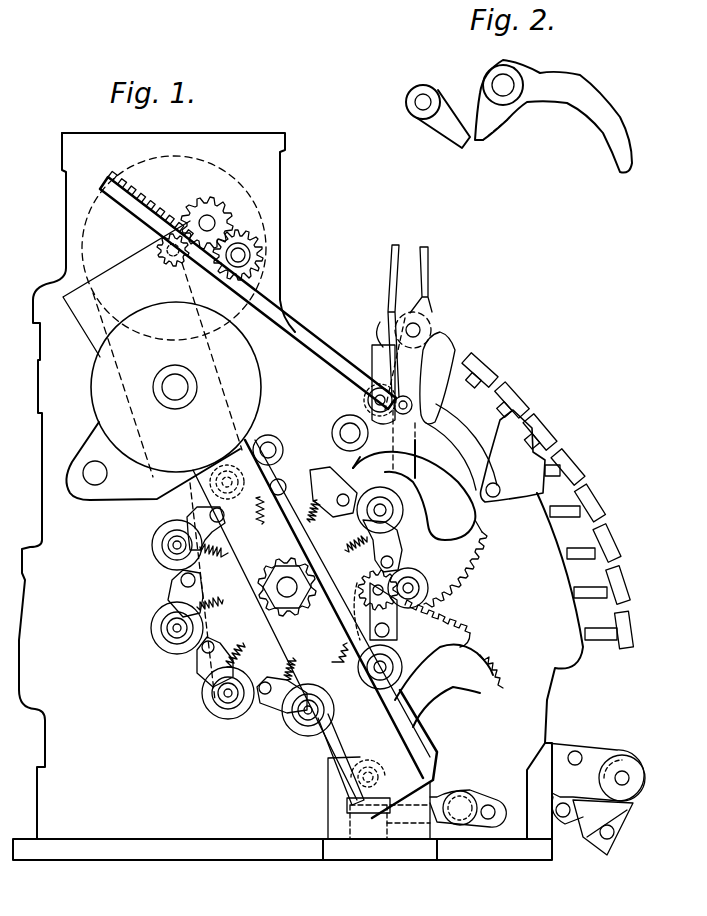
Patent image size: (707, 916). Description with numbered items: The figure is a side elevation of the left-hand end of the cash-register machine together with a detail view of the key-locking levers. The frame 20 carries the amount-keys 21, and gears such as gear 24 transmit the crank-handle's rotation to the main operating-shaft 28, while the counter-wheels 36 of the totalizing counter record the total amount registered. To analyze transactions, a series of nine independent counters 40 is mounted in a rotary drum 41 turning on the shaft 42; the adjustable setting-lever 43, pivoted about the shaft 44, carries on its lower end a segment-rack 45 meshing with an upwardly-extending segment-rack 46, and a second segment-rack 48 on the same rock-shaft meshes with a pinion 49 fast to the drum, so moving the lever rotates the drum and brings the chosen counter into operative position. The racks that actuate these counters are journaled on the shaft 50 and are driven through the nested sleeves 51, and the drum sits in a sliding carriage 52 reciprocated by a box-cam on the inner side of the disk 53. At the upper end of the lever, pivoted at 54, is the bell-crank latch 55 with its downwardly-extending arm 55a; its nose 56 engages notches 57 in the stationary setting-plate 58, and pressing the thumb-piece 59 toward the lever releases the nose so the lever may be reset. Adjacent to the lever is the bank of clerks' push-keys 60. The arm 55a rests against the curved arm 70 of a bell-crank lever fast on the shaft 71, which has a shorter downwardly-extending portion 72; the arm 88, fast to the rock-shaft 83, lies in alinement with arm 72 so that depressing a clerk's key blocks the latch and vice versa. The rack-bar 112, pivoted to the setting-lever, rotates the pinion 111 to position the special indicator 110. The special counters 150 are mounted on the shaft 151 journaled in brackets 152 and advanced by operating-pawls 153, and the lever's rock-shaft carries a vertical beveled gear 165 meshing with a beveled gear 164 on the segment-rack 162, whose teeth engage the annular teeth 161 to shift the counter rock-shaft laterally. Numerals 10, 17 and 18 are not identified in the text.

In FIG. 1, the frame 20 is at (298, 496).
In FIG. 1, the special indicator 110 is at (243, 178).
In FIG. 1, the pinion 111 is at (160, 236).
In FIG. 1, the counter-wheels 36 is at (160, 262).
In FIG. 1, the rack-bar 112 is at (290, 318).
In FIG. 1, the disk 53 is at (176, 387).
In FIG. 1, the shaft 50 is at (186, 394).
In FIG. 1, the main operating-shaft 28 is at (100, 476).
In FIG. 1, the thumb-piece 59 is at (398, 246).
In FIG. 1, the nose 56 is at (372, 345).
In FIG. 1, the pivot 54 is at (416, 328).
In FIG. 1, the setting-lever 43 is at (442, 372).
In FIG. 1, the latch 55 is at (408, 368).
In FIG. 1, the downwardly-extending arm 55a is at (482, 364).
In FIG. 1, the gear 24 is at (347, 428).
In FIG. 1, the rock-shaft 83 is at (270, 447).
In FIG. 2, the rock-shaft 83 is at (421, 99).
In FIG. 1, the stationary setting-plate 58 is at (503, 427).
In FIG. 1, the notches 57 is at (528, 447).
In FIG. 1, the push-keys 60 is at (592, 500).
In FIG. 1, the amount-keys 21 is at (617, 550).
In FIG. 1, the curved arm 70 is at (414, 490).
In FIG. 2, the curved arm 70 is at (553, 116).
In FIG. 1, the shaft 44 is at (403, 510).
In FIG. 1, the segment-rack 45 is at (455, 563).
In FIG. 1, the toothed segment 18 is at (463, 625).
In FIG. 1, the cam body 10 is at (490, 660).
In FIG. 1, the shaft 42 is at (292, 580).
In FIG. 1, the segment-rack 48 is at (360, 598).
In FIG. 1, the segment-rack 46 is at (428, 580).
In FIG. 1, the independent counters 40 is at (160, 612).
In FIG. 1, the nested sleeves 51 is at (224, 582).
In FIG. 1, the rotary drum 41 is at (237, 641).
In FIG. 1, the pinion 49 is at (302, 514).
In FIG. 1, the sliding carriage 52 is at (410, 778).
In FIG. 1, the rod 17 is at (373, 778).
In FIG. 1, the vertical beveled gear 165 is at (328, 758).
In FIG. 1, the beveled gear 164 is at (347, 800).
In FIG. 1, the segment-rack 162 is at (428, 822).
In FIG. 1, the annular teeth 161 is at (495, 789).
In FIG. 1, the brackets 152 is at (562, 753).
In FIG. 1, the special counters 150 is at (630, 757).
In FIG. 1, the shaft 151 is at (624, 779).
In FIG. 1, the operating-pawls 153 is at (617, 815).
In FIG. 2, the arm 88 is at (455, 143).
In FIG. 2, the shaft 71 is at (501, 83).
In FIG. 2, the downwardly-extending portion 72 is at (498, 130).